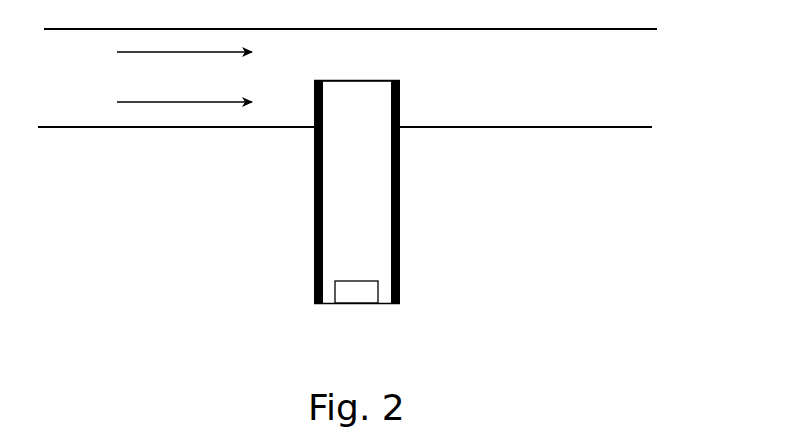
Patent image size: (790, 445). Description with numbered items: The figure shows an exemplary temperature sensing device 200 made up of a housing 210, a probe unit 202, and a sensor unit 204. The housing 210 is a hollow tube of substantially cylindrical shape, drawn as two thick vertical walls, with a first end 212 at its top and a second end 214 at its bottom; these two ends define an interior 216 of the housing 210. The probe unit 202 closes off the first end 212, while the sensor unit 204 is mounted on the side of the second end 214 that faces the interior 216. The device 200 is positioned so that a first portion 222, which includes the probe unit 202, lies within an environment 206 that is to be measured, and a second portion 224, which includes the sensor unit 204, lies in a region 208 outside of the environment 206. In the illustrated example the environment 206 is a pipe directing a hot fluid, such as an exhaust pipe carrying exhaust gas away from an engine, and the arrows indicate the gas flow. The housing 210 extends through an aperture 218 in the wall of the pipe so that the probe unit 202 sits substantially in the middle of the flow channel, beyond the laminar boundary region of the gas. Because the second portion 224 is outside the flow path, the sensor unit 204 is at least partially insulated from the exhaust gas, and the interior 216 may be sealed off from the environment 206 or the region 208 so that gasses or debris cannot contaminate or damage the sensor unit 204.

The temperature sensing device 200 is at (371, 191).
The probe unit 202 is at (358, 80).
The sensor unit 204 is at (340, 281).
The environment 206 is at (104, 111).
The region 208 is at (134, 297).
The housing 210 is at (314, 197).
The first end 212 is at (345, 78).
The second end 214 is at (338, 312).
The interior 216 is at (372, 187).
The aperture 218 is at (304, 137).
The first portion 222 is at (407, 92).
The second portion 224 is at (285, 227).